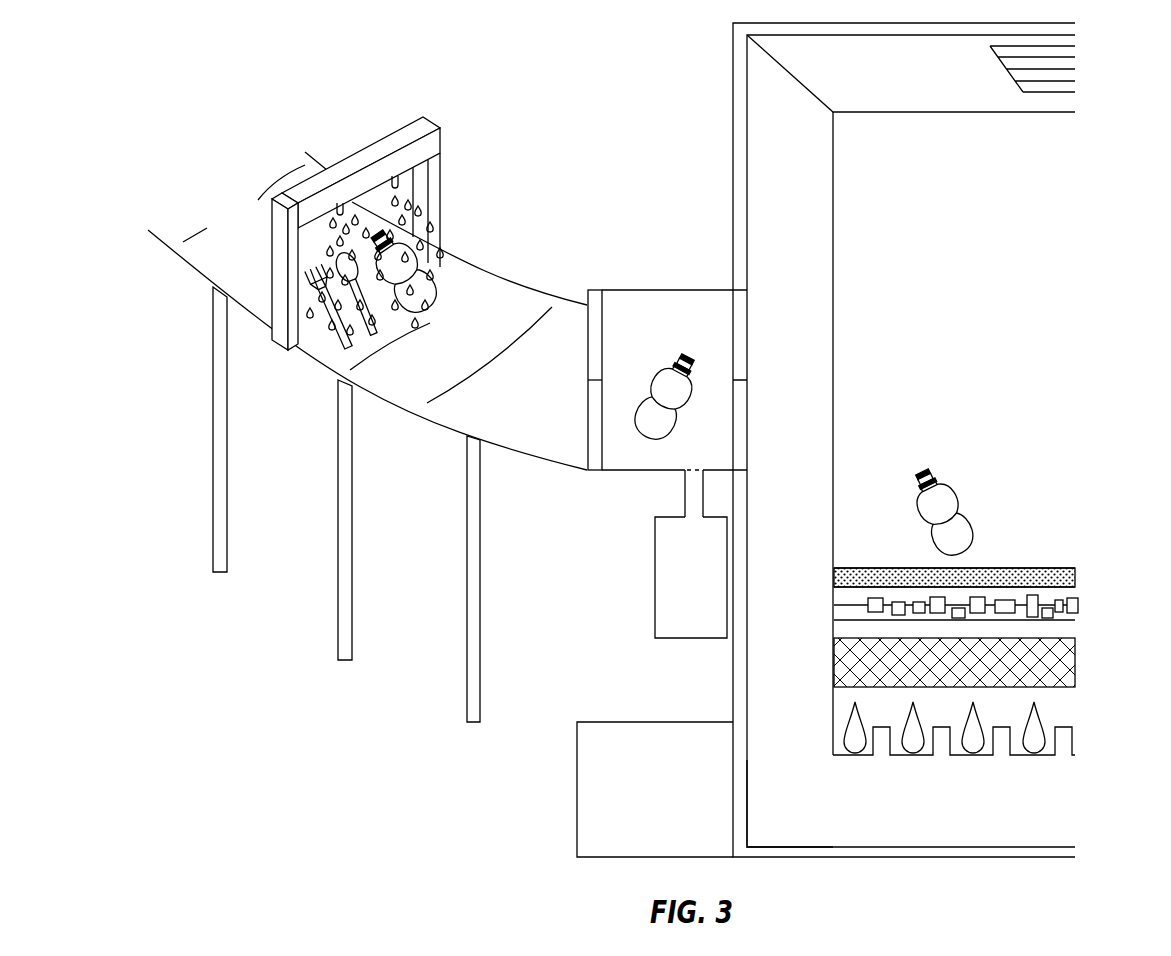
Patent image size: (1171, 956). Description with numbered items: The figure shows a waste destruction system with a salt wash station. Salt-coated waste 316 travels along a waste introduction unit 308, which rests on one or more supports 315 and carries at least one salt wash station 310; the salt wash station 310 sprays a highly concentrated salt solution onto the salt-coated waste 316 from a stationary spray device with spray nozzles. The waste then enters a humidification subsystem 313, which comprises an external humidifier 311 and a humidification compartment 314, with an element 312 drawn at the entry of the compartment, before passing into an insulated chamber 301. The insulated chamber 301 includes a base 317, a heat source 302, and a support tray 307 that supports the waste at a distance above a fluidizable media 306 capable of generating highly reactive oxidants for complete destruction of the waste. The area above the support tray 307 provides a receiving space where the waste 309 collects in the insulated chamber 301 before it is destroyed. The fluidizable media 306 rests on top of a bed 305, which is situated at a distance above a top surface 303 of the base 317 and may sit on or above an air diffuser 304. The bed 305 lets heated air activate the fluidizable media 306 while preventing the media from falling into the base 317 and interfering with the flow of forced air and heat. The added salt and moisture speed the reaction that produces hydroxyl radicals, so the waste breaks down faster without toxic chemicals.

The insulated chamber 301 is at (740, 40).
The heat source 302 is at (587, 789).
The top surface 303 is at (905, 719).
The air diffuser 304 is at (843, 657).
The bed 305 is at (850, 611).
The fluidizable media 306 is at (870, 617).
The support tray 307 is at (1030, 568).
The waste introduction unit 308 is at (208, 263).
The waste 309 is at (944, 470).
The salt wash station 310 is at (366, 156).
The external humidifier 311 is at (662, 607).
The inlet door 312 is at (588, 300).
The humidification subsystem 313 is at (675, 493).
The humidification compartment 314 is at (620, 300).
The supports 315 is at (338, 533).
The salt-coated waste 316 is at (453, 276).
The base 317 is at (833, 824).